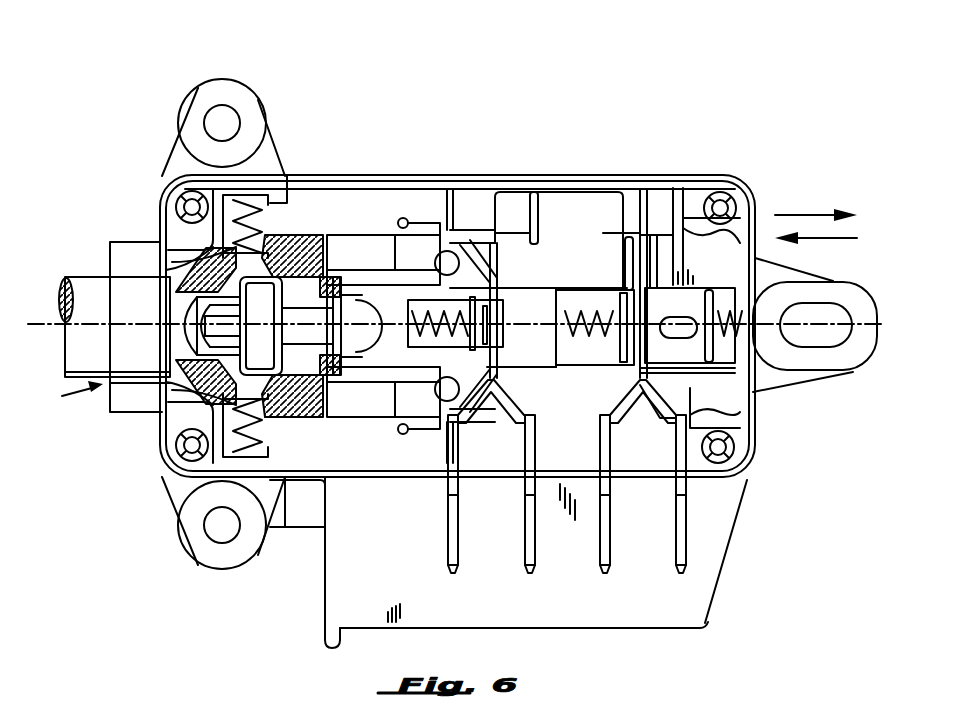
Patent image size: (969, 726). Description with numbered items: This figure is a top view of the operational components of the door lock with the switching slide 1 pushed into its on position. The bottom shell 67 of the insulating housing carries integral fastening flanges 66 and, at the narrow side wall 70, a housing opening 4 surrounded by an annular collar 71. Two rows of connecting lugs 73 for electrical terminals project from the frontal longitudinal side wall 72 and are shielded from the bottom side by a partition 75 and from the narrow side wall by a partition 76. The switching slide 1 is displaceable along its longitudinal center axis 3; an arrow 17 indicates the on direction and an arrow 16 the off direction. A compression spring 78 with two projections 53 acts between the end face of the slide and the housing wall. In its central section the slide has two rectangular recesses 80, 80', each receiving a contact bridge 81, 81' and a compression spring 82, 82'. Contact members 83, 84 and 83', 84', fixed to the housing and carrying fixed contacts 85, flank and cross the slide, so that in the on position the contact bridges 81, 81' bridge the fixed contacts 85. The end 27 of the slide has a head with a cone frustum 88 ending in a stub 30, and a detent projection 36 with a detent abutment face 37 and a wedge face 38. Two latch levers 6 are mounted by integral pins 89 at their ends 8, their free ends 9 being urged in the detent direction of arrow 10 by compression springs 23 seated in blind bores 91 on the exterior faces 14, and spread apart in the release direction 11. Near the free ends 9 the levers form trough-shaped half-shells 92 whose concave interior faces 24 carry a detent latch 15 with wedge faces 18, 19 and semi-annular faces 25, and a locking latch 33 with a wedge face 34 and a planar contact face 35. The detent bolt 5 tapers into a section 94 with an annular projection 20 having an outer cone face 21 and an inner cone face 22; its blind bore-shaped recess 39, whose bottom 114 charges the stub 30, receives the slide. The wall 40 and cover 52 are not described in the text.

The switching slide 1 is at (534, 286).
The longitudinal center axis 3 is at (52, 328).
The housing opening 4 is at (74, 393).
The detent bolt 5 is at (90, 297).
The latch levers 6 is at (407, 218).
The ends of the latch levers 8 is at (430, 240).
The free ends 9 is at (168, 252).
The arrow 10 is at (349, 232).
The release direction 11 is at (364, 250).
The exterior faces 14 is at (376, 436).
The detent latch 15 is at (200, 256).
The arrow 16 is at (812, 240).
The arrow 17 is at (800, 214).
The wedge face 18 is at (167, 365).
The wedge face 19 is at (197, 297).
The annular projection 20 is at (268, 215).
The outer cone face 21 is at (278, 272).
The inner cone face 22 is at (232, 415).
The compression spring 23 is at (262, 143).
The interior faces 24 is at (388, 235).
The semi-annular faces 25 is at (197, 350).
The end of the switching slide 27 is at (300, 235).
The stub 30 is at (270, 336).
The locking latch 33 is at (296, 408).
The wedge face 34 is at (330, 380).
The planar contact face 35 is at (288, 476).
The detent projection 36 is at (332, 326).
The detent abutment face 37 is at (358, 314).
The wedge face 38 is at (330, 275).
The blind bore-shaped recess 39 is at (197, 333).
The bottom of the recess 114 is at (197, 333).
The wall 40 is at (355, 268).
The cover plate 52 is at (584, 182).
The projections 53 is at (556, 380).
The fastening flanges 66 is at (205, 105).
The bottom shell 67 is at (752, 445).
The narrow side wall 70 is at (160, 247).
The annular collar 71 is at (118, 402).
The frontal longitudinal side wall 72 is at (728, 482).
The connecting lugs 73 is at (525, 532).
The partition 75 is at (648, 618).
The partition 76 is at (322, 630).
The compression spring 78 is at (778, 375).
The rectangular recess 80 is at (538, 341).
The rectangular recess 80' is at (596, 344).
The contact bridge 81 is at (509, 310).
The contact bridge 81' is at (590, 310).
The compression spring 82 is at (559, 241).
The compression spring 82' is at (605, 254).
The contact member 83 is at (474, 515).
The contact member 83' is at (627, 515).
The contact member 84 is at (550, 515).
The contact member 84' is at (721, 513).
The fixed contacts 85 is at (495, 313).
The cone frustum 88 is at (360, 347).
The pins 89 is at (457, 256).
The blind bores 91 is at (197, 538).
The half-shells 92 is at (183, 146).
The section 94 is at (197, 314).